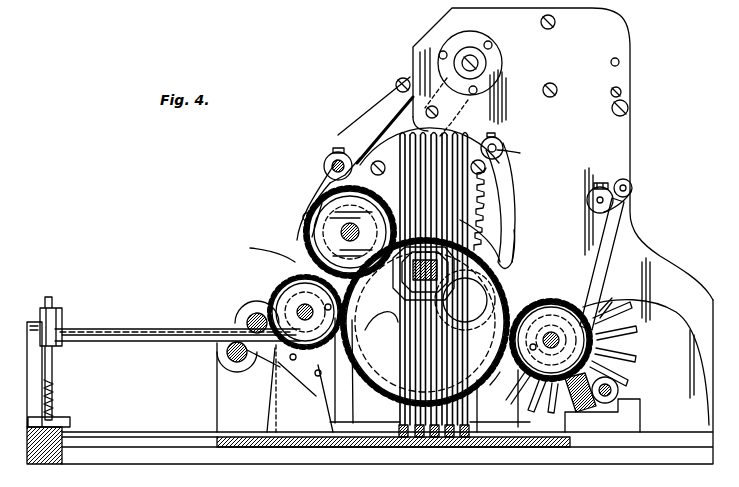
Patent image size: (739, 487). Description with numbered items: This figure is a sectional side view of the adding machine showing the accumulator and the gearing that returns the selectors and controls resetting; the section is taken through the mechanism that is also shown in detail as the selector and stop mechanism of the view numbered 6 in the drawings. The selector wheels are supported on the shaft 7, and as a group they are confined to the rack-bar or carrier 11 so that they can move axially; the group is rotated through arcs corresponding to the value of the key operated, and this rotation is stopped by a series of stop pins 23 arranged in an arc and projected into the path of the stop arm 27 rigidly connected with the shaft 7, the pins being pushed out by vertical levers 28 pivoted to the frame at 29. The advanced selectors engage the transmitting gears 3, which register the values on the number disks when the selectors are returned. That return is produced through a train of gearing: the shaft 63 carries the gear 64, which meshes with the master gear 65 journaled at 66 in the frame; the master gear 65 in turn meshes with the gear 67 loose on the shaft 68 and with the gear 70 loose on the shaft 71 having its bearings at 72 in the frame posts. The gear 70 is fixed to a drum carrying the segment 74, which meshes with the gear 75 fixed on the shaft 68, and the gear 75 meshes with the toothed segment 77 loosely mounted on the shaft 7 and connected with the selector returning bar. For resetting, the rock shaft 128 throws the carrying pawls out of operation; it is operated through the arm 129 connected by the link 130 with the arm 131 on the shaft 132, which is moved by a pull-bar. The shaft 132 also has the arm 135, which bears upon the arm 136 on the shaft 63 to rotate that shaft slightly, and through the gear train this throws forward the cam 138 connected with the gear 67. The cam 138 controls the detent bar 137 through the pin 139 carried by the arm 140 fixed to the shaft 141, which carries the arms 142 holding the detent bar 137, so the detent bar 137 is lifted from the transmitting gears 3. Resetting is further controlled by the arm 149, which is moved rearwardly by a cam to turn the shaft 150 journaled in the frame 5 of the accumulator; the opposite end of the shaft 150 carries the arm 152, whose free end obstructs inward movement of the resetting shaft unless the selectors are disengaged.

The transmitting gear 3 is at (382, 97).
The frame of the accumulator 5 is at (563, 216).
The toothed sector 6 is at (493, 198).
The shaft 7 is at (477, 180).
The rack-bar or carrier 11 is at (472, 260).
The stop pins 23 is at (463, 83).
The stop arm 27 is at (500, 153).
The vertical levers 28 is at (470, 290).
The pivot 29 is at (473, 310).
The shaft 63 is at (551, 349).
The gear 64 is at (554, 296).
The master gear 65 is at (513, 371).
The journal 66 is at (418, 348).
The gear 67 is at (303, 240).
The shaft 68 is at (302, 218).
The gear 70 is at (270, 286).
The shaft 71 is at (305, 312).
The bearings 72 is at (257, 306).
The segment 74 is at (293, 273).
The gear 75 is at (250, 248).
The toothed segment 77 is at (467, 218).
The rock shaft 128 is at (598, 200).
The arm 129 is at (621, 181).
The link 130 is at (603, 271).
The arm 131 is at (600, 400).
The shaft 132 is at (619, 388).
The arm 135 is at (617, 360).
The arm 136 is at (567, 402).
The detent bar 137 is at (397, 84).
The cam 138 is at (322, 203).
The pin 139 is at (302, 207).
The arm 140 is at (307, 200).
The shaft 141 is at (333, 153).
The arms 142 is at (376, 150).
The arm 149 is at (512, 250).
The shaft 150 is at (497, 150).
The arm 152 is at (440, 104).